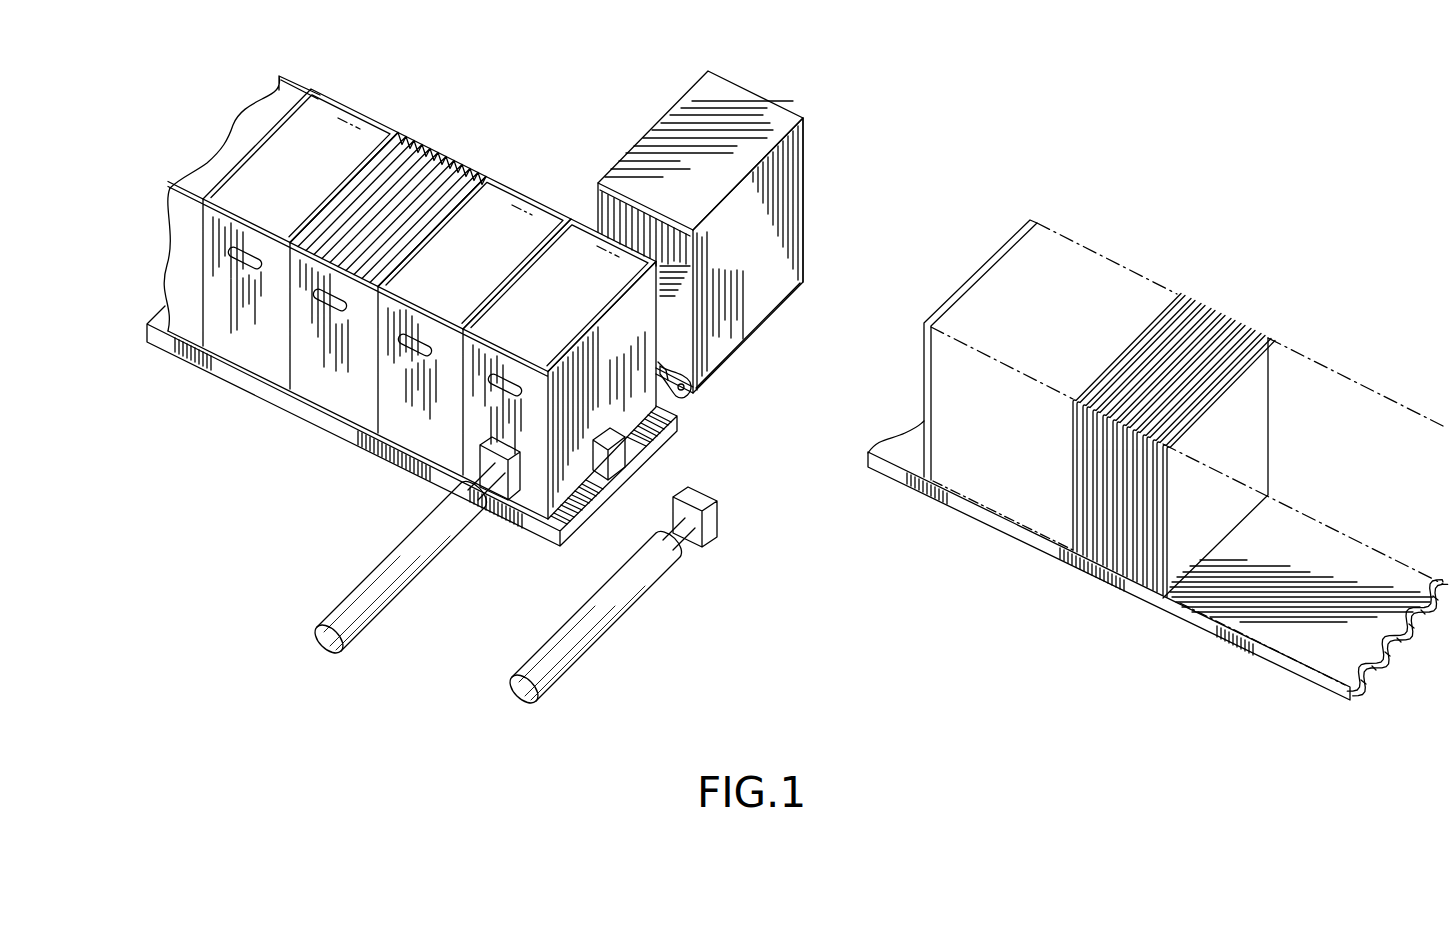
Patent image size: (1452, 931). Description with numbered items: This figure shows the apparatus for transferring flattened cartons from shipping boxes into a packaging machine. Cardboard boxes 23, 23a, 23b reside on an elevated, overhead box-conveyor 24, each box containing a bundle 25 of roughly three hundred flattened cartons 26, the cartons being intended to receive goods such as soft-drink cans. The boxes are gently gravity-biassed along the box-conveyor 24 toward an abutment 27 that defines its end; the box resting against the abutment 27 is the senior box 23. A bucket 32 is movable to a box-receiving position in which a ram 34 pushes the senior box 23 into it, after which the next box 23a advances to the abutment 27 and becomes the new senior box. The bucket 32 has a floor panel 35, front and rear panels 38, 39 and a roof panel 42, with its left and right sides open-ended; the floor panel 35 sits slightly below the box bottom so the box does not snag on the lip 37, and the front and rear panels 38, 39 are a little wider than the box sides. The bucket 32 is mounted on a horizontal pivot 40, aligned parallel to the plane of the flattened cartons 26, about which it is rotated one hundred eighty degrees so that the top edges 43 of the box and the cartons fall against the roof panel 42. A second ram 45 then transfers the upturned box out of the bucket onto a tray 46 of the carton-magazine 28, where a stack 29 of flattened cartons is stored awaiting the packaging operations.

The senior box 23 is at (519, 434).
The next box 23a is at (439, 413).
The cardboard box 23b is at (346, 371).
The box-conveyor 24 is at (310, 417).
The bundle 25 is at (500, 212).
The flattened cartons 26 is at (447, 142).
The abutment 27 is at (617, 467).
The carton-magazine 28 is at (1197, 630).
The stack 29 is at (1098, 253).
The bucket 32 is at (658, 125).
The ram 34 is at (443, 557).
The floor panel 35 is at (680, 343).
The lip 37 is at (668, 377).
The front panel 38 is at (793, 193).
The rear panel 39 is at (612, 212).
The pivot 40 is at (687, 403).
The roof panel 42 is at (733, 93).
The top edges 43 is at (562, 350).
The ram 45 is at (637, 600).
The tray 46 is at (905, 458).